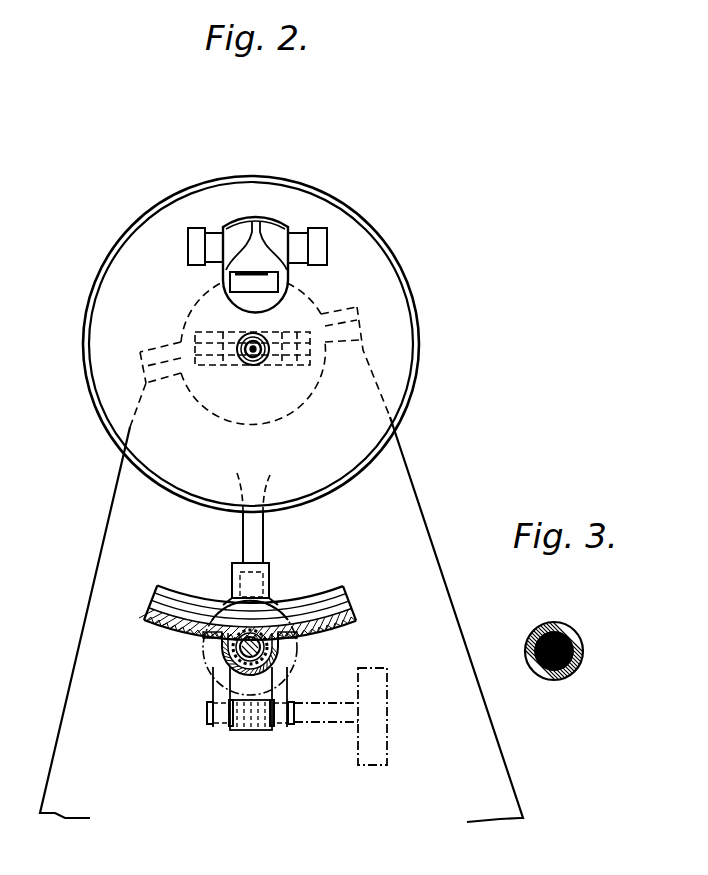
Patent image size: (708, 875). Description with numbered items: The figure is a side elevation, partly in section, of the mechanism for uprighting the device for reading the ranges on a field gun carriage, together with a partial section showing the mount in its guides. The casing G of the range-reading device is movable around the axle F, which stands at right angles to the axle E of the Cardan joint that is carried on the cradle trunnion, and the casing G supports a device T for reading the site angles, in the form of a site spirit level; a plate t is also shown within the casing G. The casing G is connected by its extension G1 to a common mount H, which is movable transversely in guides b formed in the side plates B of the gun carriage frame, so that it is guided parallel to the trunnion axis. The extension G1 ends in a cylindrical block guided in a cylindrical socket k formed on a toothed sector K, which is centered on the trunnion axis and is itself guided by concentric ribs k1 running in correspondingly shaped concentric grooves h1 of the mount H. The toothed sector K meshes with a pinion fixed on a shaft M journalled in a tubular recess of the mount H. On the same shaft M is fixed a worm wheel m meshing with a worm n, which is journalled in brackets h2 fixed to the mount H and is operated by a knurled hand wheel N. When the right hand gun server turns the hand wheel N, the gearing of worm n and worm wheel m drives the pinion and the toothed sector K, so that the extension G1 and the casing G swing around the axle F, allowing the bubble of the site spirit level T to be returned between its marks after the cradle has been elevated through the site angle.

In FIG. 2, the casing G is at (398, 383).
In FIG. 2, the device for reading the site angles T is at (260, 240).
In FIG. 2, the lamp socket plate t is at (277, 281).
In FIG. 2, the axle E is at (297, 360).
In FIG. 2, the axle F is at (253, 357).
In FIG. 2, the side plates of the gun carriage frame B is at (417, 525).
In FIG. 2, the extension G1 is at (255, 542).
In FIG. 2, the cylindrical socket k is at (270, 570).
In FIG. 2, the concentric ribs k1 is at (343, 602).
In FIG. 2, the grooves h1 is at (357, 620).
In FIG. 2, the worm wheel m is at (208, 668).
In FIG. 2, the shaft M is at (268, 656).
In FIG. 3, the shaft M is at (548, 675).
In FIG. 2, the toothed sector K is at (216, 625).
In FIG. 2, the worm n is at (250, 728).
In FIG. 2, the brackets h2 is at (278, 745).
In FIG. 2, the knurled hand wheel N is at (388, 743).
In FIG. 3, the mount H is at (578, 642).
In FIG. 3, the guides b is at (562, 623).